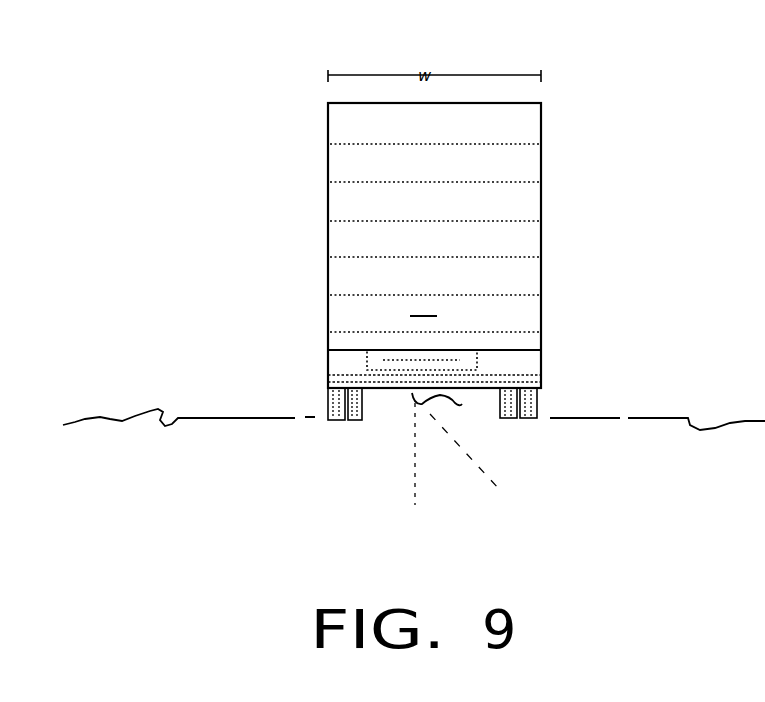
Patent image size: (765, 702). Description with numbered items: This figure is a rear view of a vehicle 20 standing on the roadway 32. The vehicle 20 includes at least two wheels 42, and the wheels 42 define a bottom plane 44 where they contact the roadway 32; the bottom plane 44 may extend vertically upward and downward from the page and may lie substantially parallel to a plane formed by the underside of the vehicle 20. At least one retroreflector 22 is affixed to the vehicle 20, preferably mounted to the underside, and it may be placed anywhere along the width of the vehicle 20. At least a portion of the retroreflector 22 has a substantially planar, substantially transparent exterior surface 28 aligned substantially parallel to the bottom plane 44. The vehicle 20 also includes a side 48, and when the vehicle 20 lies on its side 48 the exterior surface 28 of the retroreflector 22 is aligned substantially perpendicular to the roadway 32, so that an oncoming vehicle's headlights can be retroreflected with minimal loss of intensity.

The vehicle 20 is at (612, 112).
The side 48 is at (326, 243).
The wheels 42 is at (510, 420).
The retroreflector 22 is at (410, 394).
The exterior surface 28 is at (451, 404).
The bottom plane 44 is at (548, 413).
The roadway 32 is at (587, 414).